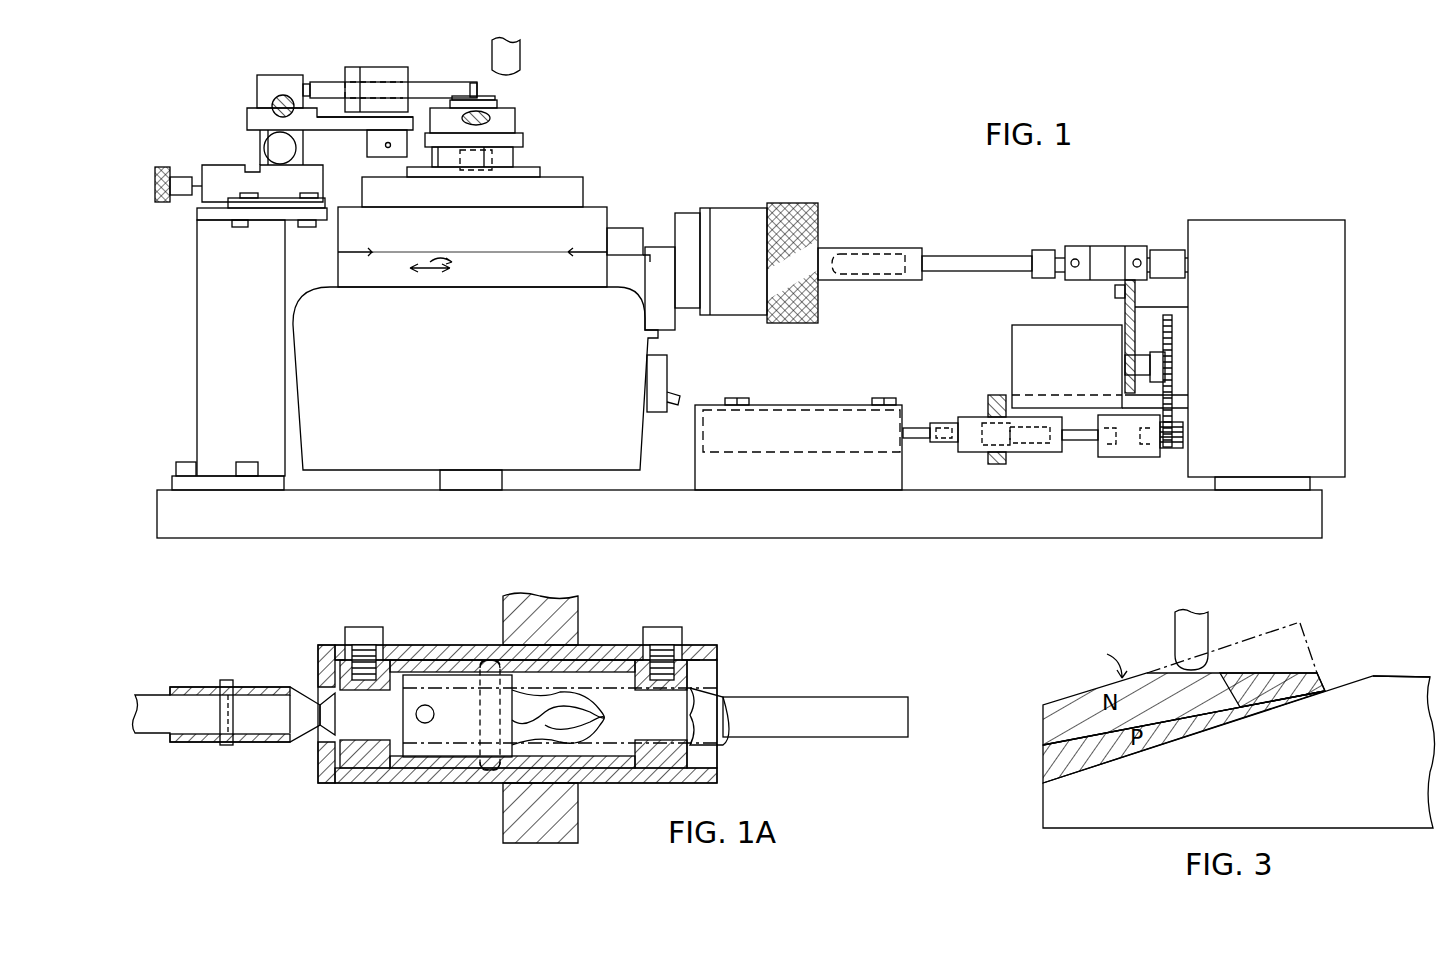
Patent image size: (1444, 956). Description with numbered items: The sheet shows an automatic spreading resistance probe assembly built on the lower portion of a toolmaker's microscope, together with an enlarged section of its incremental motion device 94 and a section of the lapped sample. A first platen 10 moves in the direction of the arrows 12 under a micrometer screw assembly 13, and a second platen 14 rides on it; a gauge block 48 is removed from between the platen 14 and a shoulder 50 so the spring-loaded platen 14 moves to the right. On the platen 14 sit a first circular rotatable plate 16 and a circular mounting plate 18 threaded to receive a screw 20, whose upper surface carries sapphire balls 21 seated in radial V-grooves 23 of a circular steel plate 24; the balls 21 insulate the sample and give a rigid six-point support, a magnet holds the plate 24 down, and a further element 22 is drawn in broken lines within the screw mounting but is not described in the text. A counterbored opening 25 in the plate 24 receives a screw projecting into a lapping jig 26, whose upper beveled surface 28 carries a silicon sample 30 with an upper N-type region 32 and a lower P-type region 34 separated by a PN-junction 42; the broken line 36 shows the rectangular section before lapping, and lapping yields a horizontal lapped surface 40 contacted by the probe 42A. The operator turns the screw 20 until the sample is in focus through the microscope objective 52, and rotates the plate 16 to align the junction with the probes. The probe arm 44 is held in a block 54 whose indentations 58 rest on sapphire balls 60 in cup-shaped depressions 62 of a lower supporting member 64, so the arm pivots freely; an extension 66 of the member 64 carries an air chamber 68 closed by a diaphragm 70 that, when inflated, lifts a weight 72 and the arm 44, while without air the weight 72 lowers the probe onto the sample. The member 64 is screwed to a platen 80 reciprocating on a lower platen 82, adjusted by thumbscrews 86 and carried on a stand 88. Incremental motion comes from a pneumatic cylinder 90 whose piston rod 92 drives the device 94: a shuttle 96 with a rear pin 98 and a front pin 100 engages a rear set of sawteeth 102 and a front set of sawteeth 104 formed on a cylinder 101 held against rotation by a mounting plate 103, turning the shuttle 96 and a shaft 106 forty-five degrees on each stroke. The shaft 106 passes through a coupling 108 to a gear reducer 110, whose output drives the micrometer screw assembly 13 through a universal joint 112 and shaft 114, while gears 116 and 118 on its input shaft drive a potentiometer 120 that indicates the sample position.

In FIG. 1, the first platen 10 is at (348, 267).
In FIG. 1, the arrows 12 is at (450, 268).
In FIG. 1, the micrometer screw assembly 13 is at (722, 213).
In FIG. 1, the second platen 14 is at (350, 232).
In FIG. 1, the first circular rotatable plate 16 is at (582, 200).
In FIG. 1, the circular mounting plate 18 is at (542, 176).
In FIG. 1, the screw 20 is at (524, 138).
In FIG. 1, the sapphire balls 21 is at (438, 150).
In FIG. 1, the spring 22 is at (478, 160).
In FIG. 1, the radial V-grooves 23 is at (505, 132).
In FIG. 1, the circular steel plate 24 is at (517, 118).
In FIG. 1, the counterbored opening 25 is at (461, 120).
In FIG. 1, the lapping jig 26 is at (500, 108).
In FIG. 3, the lapping jig 26 is at (1345, 828).
In FIG. 3, the upper beveled surface 28 is at (1375, 676).
In FIG. 3, the silicon sample 30 is at (1106, 656).
In FIG. 3, the N-type region 32 is at (1050, 722).
In FIG. 3, the P-type region 34 is at (1050, 770).
In FIG. 3, the broken line 36 is at (1278, 622).
In FIG. 3, the lapped surface 40 is at (1305, 678).
In FIG. 3, the PN-junction 42 is at (1253, 722).
In FIG. 1, the probe 42A is at (478, 98).
In FIG. 3, the probe 42A is at (1175, 620).
In FIG. 1, the probe arm 44 is at (424, 88).
In FIG. 1, the gauge block 48 is at (620, 228).
In FIG. 1, the shoulder 50 is at (643, 252).
In FIG. 1, the microscope objective 52 is at (520, 58).
In FIG. 1, the block 54 is at (285, 78).
In FIG. 1, the indentations 58 is at (273, 96).
In FIG. 1, the sapphire balls 60 is at (293, 138).
In FIG. 1, the spherical cup-shaped depressions 62 is at (280, 113).
In FIG. 1, the lower supporting member 64 is at (266, 117).
In FIG. 1, the arm or extension 66 is at (352, 135).
In FIG. 1, the air chamber 68 is at (380, 148).
In FIG. 1, the diaphragm 70 is at (385, 112).
In FIG. 1, the weight 72 is at (378, 67).
In FIG. 1, the platen 80 is at (298, 160).
In FIG. 1, the lower platen 82 is at (255, 176).
In FIG. 1, the thumbscrews 86 is at (163, 168).
In FIG. 1, the stand 88 is at (197, 276).
In FIG. 1, the pneumatic cylinder 90 is at (815, 405).
In FIG. 1, the piston rod 92 is at (915, 428).
In FIG. 1A, the piston rod 92 is at (250, 700).
In FIG. 1, the incremental motion device 94 is at (960, 417).
In FIG. 1A, the incremental motion device 94 is at (302, 802).
In FIG. 1A, the shuttle 96 is at (440, 742).
In FIG. 1A, the rear pin 98 is at (416, 714).
In FIG. 1A, the front pin 100 is at (492, 665).
In FIG. 1A, the cylinder 101 is at (488, 782).
In FIG. 1A, the rear set of sawteeth 102 is at (412, 660).
In FIG. 1A, the mounting plate 103 is at (505, 828).
In FIG. 1A, the front set of sawteeth 104 is at (612, 648).
In FIG. 1, the shaft 106 is at (1078, 441).
In FIG. 1A, the shaft 106 is at (908, 718).
In FIG. 1, the coupling 108 is at (1125, 458).
In FIG. 1, the gear reducer 110 is at (1272, 336).
In FIG. 1, the universal joint 112 is at (1116, 250).
In FIG. 1, the shaft 114 is at (970, 256).
In FIG. 1, the gear 116 is at (1172, 345).
In FIG. 1, the gear 118 is at (1176, 450).
In FIG. 1, the potentiometer 120 is at (1070, 325).